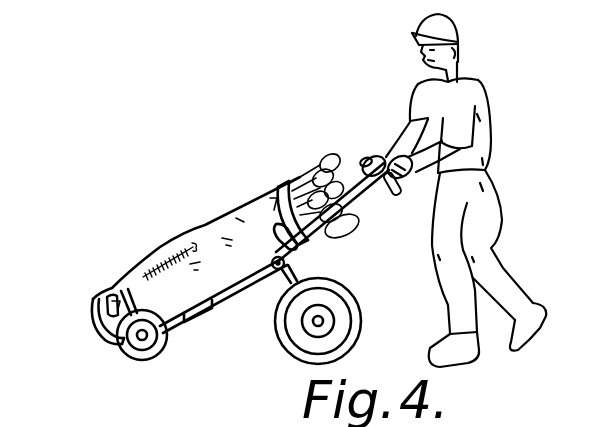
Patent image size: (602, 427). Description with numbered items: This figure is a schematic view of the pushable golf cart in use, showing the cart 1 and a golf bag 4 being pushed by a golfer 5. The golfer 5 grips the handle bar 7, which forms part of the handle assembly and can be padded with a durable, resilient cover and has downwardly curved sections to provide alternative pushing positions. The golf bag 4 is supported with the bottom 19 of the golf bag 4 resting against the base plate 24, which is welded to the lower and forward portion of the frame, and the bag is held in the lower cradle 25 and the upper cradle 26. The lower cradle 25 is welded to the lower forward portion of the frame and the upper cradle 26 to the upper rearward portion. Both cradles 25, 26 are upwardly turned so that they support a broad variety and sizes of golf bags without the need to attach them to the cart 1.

The cart 1 is at (240, 312).
The golf bag 4 is at (246, 230).
The golfer 5 is at (497, 162).
The handle bar 7 is at (396, 193).
The bottom of the golf bag 19 is at (97, 297).
The base plate 24 is at (100, 339).
The lower cradle 25 is at (123, 287).
The upper cradle 26 is at (298, 252).